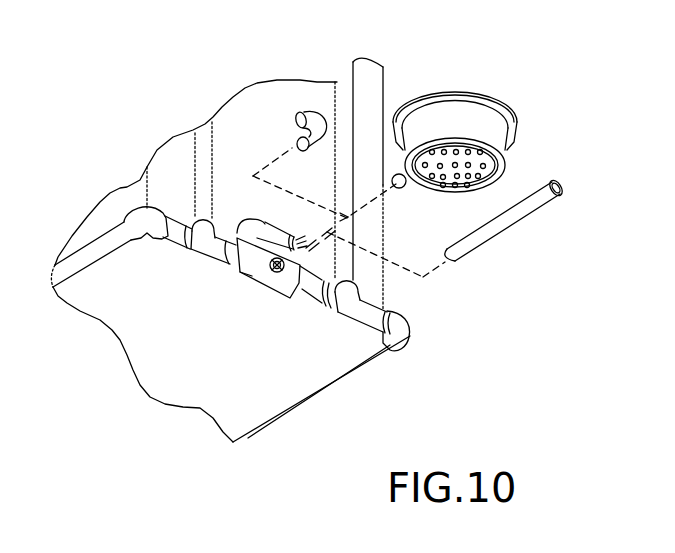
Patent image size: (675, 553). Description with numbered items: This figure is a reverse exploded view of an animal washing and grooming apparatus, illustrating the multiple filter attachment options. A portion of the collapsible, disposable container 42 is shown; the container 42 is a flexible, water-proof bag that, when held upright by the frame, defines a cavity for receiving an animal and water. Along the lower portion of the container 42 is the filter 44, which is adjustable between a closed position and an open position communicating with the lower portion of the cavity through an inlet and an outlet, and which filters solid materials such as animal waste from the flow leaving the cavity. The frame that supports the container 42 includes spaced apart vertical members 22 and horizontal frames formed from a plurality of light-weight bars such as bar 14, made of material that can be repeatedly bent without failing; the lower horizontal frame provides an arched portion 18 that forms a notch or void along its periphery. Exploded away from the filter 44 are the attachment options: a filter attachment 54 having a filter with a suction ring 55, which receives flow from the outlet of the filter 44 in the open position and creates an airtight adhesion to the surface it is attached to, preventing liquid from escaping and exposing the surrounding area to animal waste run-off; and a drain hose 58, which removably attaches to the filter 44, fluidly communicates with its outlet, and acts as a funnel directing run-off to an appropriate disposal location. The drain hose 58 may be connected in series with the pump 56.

The bar 14 is at (88, 248).
The arched portion 18 is at (277, 233).
The vertical member 22 is at (200, 147).
The disposable container 42 is at (129, 193).
The filter 44 is at (260, 282).
The filter attachment 54 is at (480, 93).
The suction ring 55 is at (503, 165).
The pump 56 is at (296, 115).
The drain hose 58 is at (470, 248).